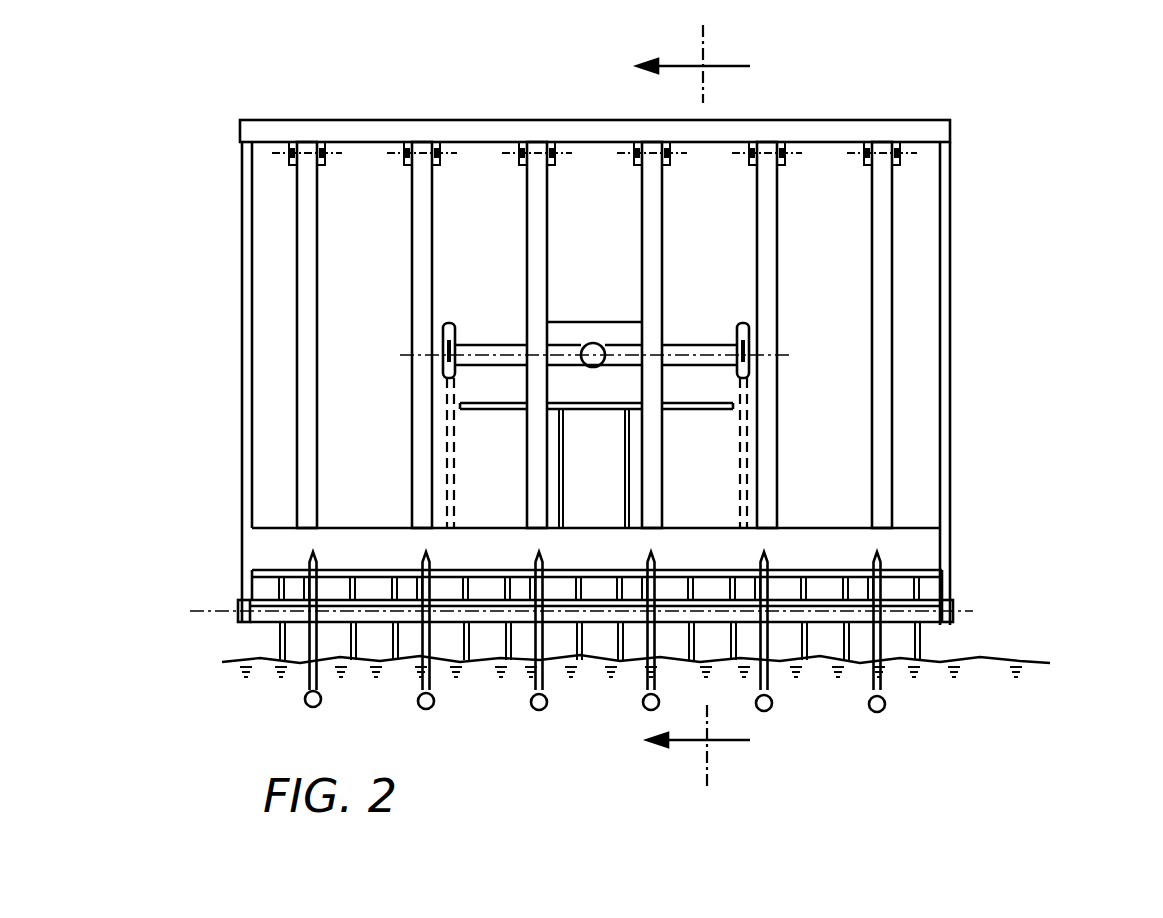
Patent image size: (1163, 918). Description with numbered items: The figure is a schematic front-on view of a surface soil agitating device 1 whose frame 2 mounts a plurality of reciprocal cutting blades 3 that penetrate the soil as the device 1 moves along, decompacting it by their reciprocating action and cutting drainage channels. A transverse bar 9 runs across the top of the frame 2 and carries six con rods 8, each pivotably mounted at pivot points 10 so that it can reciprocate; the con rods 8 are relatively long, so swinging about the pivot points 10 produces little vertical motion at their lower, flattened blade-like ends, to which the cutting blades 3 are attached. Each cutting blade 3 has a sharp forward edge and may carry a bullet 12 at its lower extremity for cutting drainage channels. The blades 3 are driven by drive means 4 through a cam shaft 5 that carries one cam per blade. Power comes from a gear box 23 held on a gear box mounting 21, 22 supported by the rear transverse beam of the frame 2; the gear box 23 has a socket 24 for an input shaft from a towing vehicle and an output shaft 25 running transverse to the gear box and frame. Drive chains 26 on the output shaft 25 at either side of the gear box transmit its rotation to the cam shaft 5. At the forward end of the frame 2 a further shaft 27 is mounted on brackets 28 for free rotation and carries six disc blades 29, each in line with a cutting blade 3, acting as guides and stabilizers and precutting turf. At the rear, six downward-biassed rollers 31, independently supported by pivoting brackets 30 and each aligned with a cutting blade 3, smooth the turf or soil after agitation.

The surface soil agitating device 1 is at (1008, 256).
The frame 2 is at (243, 245).
The reciprocal cutting blades 3 is at (413, 685).
The drive means 4 is at (590, 285).
The cam shaft 5 is at (693, 407).
The con rods 8 is at (868, 243).
The transverse bar 9 is at (553, 130).
The pivot points 10 is at (400, 142).
The bullet 12 is at (640, 706).
The gear box mounting 21 is at (590, 470).
The gear box mounting 22 is at (500, 412).
The gear box 23 is at (622, 352).
The socket 24 is at (584, 353).
The output shaft 25 is at (698, 360).
The drive chains 26 is at (753, 442).
The further shaft 27 is at (478, 655).
The brackets 28 is at (953, 625).
The disc blades 29 is at (772, 704).
The brackets 30 is at (300, 567).
The rollers 31 is at (897, 660).